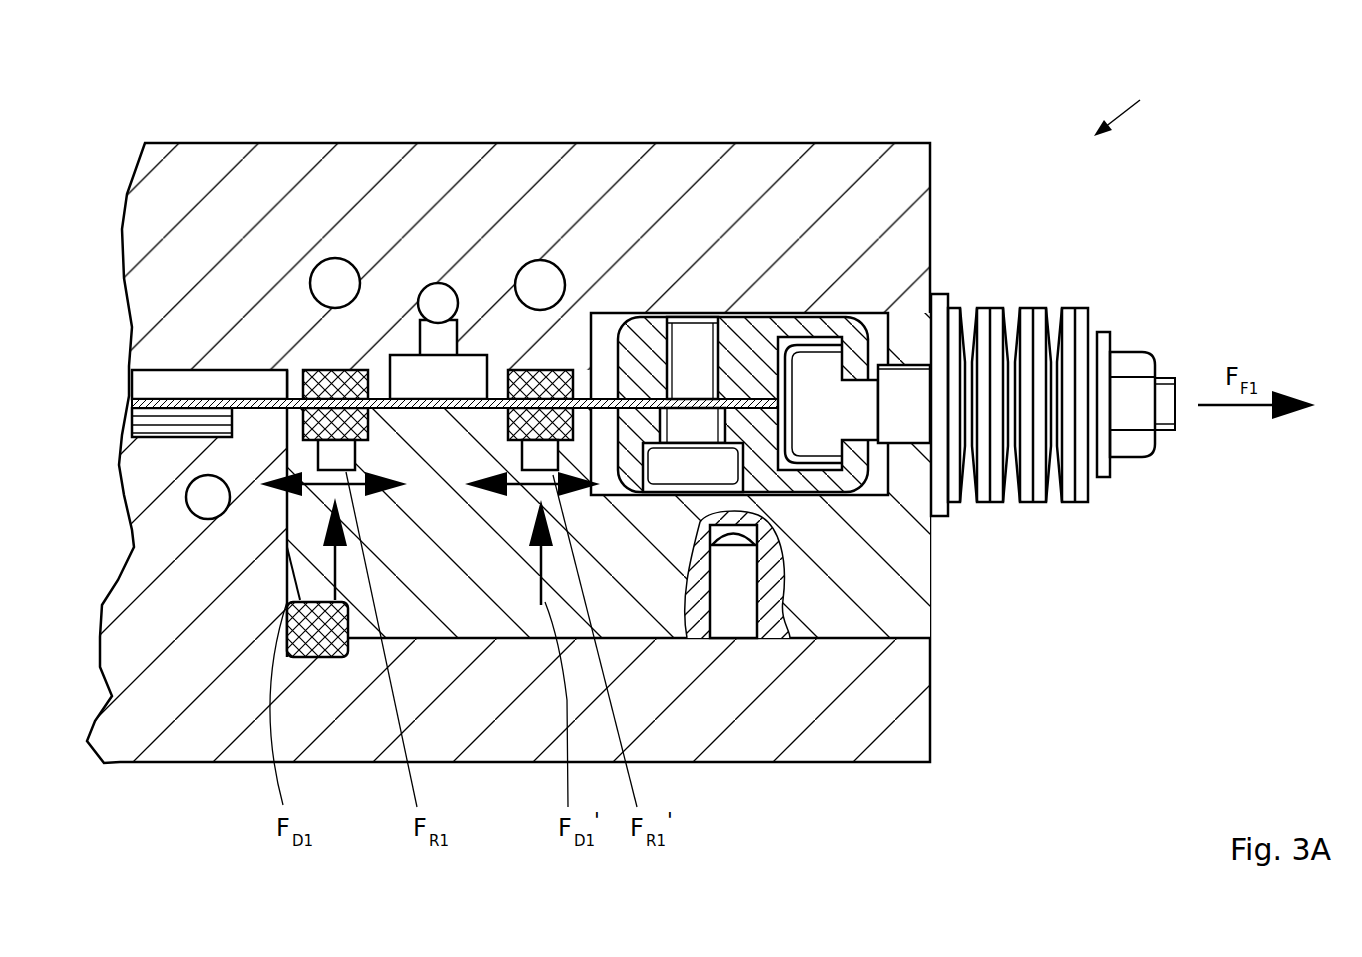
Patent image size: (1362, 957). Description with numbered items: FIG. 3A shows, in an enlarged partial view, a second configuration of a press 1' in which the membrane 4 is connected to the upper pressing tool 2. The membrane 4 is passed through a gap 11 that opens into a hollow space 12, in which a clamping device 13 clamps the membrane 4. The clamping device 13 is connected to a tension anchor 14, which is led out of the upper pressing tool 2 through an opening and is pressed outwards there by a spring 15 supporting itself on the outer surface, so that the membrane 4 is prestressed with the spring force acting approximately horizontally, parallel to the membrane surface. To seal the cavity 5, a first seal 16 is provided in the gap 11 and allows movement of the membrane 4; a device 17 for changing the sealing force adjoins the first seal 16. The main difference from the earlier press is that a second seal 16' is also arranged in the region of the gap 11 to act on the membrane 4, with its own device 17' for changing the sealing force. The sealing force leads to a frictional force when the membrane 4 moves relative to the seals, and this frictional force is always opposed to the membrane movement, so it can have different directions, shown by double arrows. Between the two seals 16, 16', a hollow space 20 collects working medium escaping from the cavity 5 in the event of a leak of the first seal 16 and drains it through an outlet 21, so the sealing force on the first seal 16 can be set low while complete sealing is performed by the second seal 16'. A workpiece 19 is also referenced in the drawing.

The press 1' is at (1128, 108).
The upper pressing tool 2 is at (900, 160).
The membrane 4 is at (143, 398).
The cavity 5 is at (170, 383).
The gap 11 is at (676, 325).
The hollow space 12 is at (607, 327).
The clamping device 13 is at (752, 337).
The tension anchor 14 is at (820, 367).
The spring 15 is at (1025, 320).
The first seal 16 is at (205, 298).
The second seal 16' is at (629, 452).
The device for changing the sealing force 17 is at (198, 517).
The device for changing the sealing force 17' is at (522, 641).
The workpiece 19 is at (160, 430).
The hollow space 20 is at (460, 383).
The outlet 21 is at (438, 300).